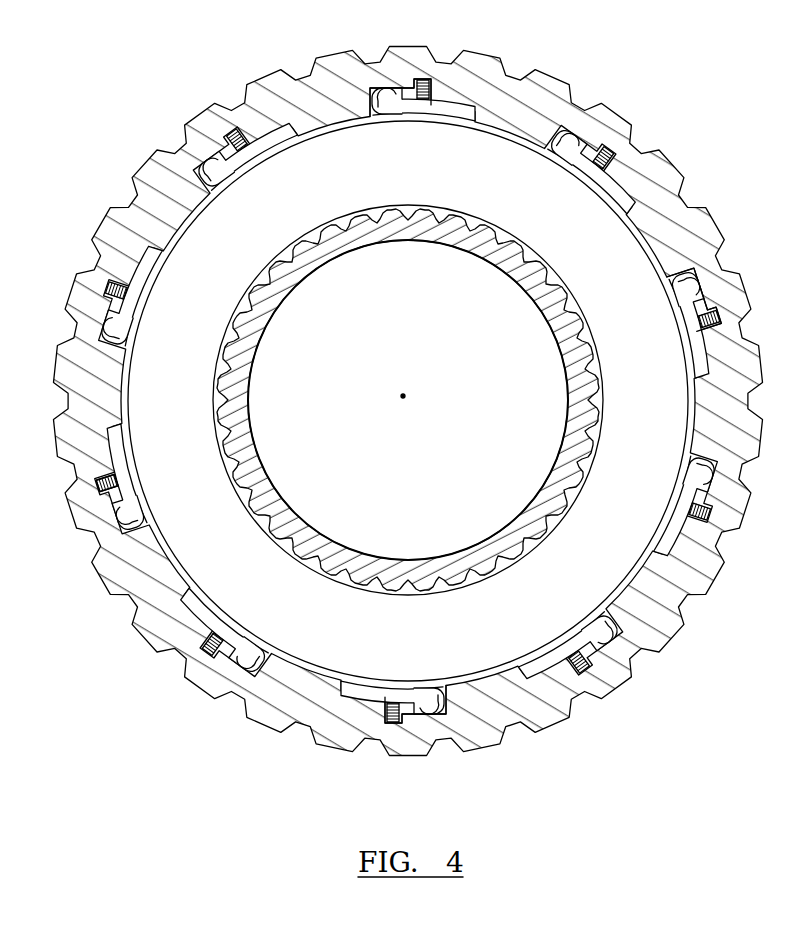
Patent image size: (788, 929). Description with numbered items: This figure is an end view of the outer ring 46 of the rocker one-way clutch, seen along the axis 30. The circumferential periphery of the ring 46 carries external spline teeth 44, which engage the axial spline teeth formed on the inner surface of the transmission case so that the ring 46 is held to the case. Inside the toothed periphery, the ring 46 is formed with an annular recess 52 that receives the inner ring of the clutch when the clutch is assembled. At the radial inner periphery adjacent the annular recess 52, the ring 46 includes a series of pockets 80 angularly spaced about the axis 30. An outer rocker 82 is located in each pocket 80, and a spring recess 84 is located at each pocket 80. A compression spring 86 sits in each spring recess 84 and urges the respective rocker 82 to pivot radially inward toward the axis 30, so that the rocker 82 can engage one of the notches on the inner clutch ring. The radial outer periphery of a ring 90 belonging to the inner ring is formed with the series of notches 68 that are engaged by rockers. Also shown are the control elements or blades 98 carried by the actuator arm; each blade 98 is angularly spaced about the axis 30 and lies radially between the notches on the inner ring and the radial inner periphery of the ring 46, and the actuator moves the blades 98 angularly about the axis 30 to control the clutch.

The axis 30 is at (403, 399).
The external spline teeth 44 is at (618, 120).
The ring 46 is at (143, 71).
The annular recess 52 is at (363, 179).
The notches 68 is at (383, 225).
The pockets 80 is at (200, 167).
The outer rockers 82 is at (283, 135).
The spring recesses 84 is at (237, 138).
The compression springs 86 is at (107, 488).
The ring 90 is at (247, 395).
The control elements or blades 98 is at (370, 112).